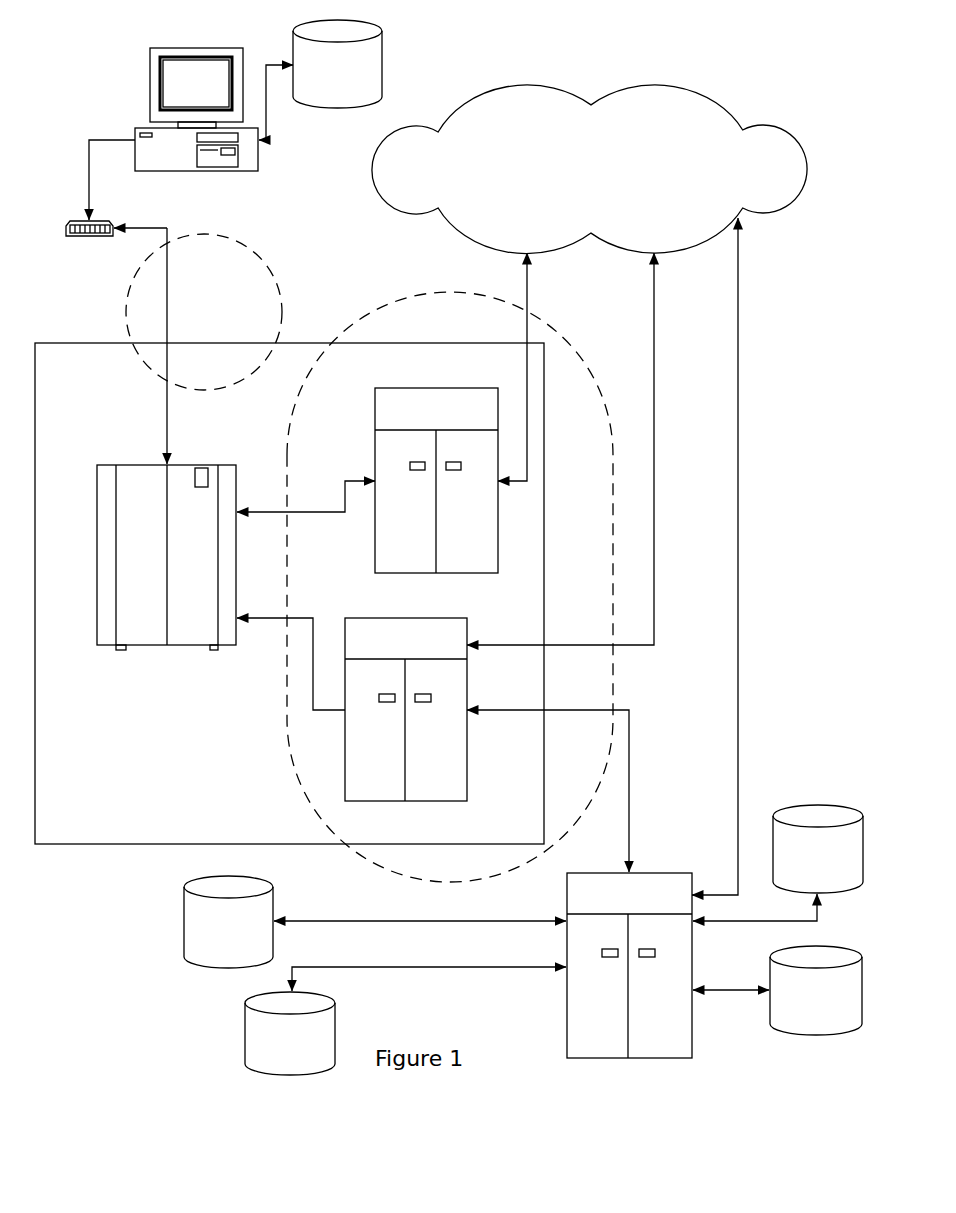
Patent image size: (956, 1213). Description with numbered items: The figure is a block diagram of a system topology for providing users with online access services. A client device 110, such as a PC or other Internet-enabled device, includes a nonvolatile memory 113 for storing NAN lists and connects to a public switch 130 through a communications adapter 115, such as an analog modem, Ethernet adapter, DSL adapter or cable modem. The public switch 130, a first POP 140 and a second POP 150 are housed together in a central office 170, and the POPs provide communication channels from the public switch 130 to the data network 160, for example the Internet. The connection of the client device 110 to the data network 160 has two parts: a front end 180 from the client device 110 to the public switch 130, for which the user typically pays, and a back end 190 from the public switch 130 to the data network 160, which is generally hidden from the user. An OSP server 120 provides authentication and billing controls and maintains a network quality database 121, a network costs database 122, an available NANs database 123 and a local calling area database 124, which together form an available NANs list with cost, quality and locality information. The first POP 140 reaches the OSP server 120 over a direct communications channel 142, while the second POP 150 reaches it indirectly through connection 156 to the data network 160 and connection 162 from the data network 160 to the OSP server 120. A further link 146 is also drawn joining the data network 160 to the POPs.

The client device 110 is at (150, 80).
The memory 113 is at (382, 68).
The communications adapter 115 is at (95, 236).
The OSP server 120 is at (567, 1030).
The network quality database 121 is at (245, 1033).
The network costs database 122 is at (228, 963).
The available NANs database 123 is at (810, 1035).
The local calling area database 124 is at (810, 805).
The public switch 130 is at (120, 465).
The first POP 140 is at (467, 752).
The direct communications channel 142 is at (629, 785).
The connection between network and POP 146 is at (654, 385).
The second POP 150 is at (437, 388).
The connection 156 is at (527, 278).
The data network 160 is at (372, 175).
The connection 162 is at (738, 540).
The central office 170 is at (133, 844).
The front end 180 is at (263, 258).
The back end 190 is at (580, 340).